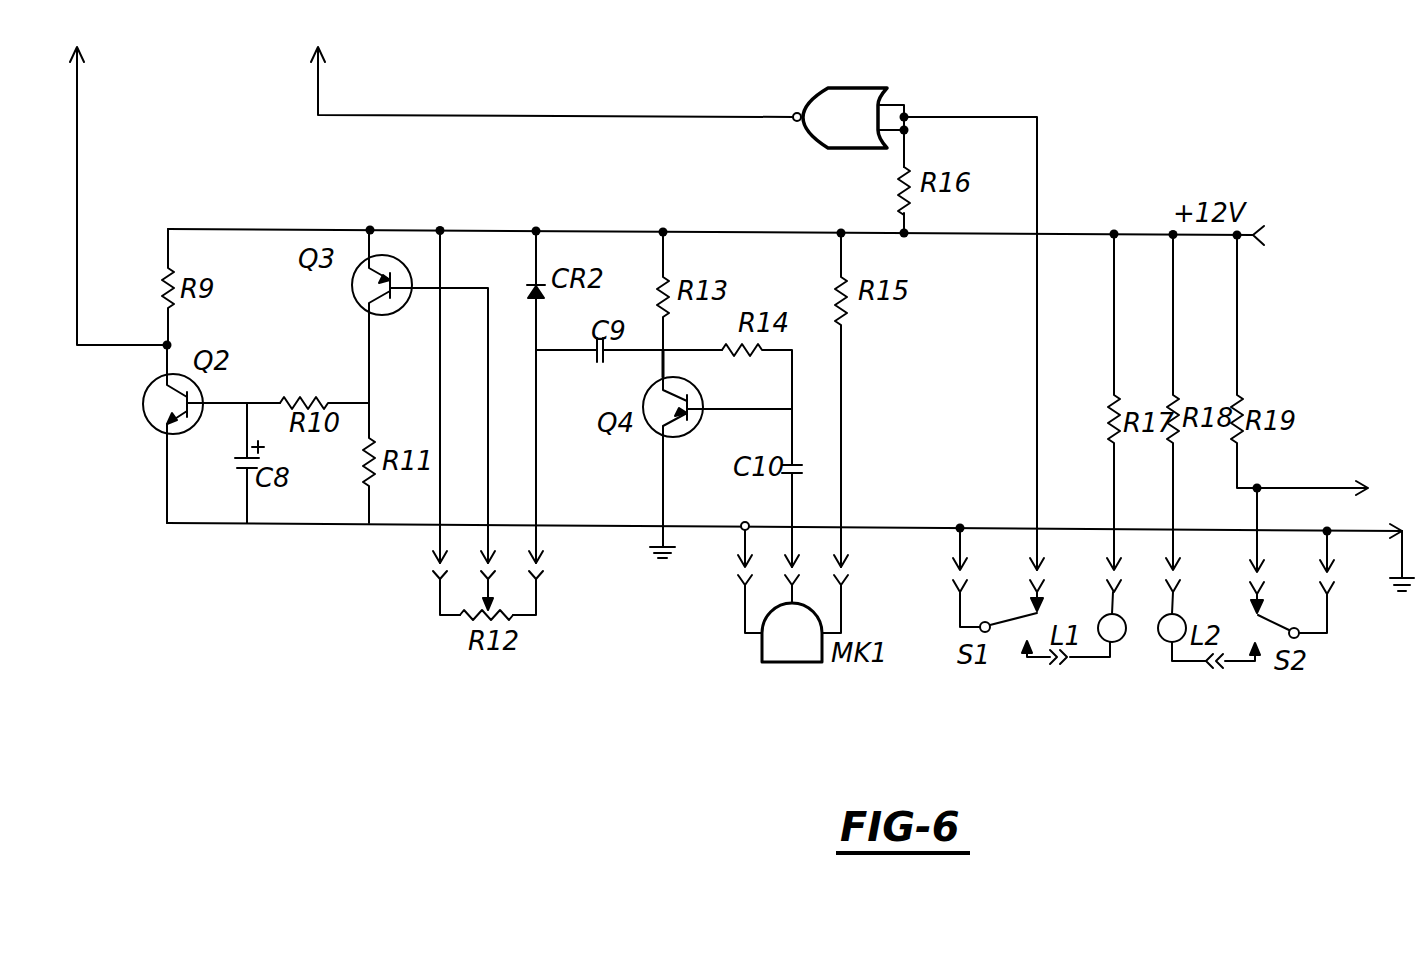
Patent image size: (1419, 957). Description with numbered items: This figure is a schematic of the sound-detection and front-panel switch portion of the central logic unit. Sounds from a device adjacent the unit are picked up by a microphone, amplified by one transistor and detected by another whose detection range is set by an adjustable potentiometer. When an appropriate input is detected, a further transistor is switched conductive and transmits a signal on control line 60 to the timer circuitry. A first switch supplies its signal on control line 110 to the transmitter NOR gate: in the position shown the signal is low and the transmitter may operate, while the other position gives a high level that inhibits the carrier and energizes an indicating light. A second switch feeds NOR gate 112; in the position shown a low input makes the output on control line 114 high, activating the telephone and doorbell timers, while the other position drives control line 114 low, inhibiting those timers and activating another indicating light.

The control line 60 is at (77, 147).
The control line 114 is at (406, 115).
The NOR gate 112 is at (829, 94).
The control line 110 is at (1319, 476).